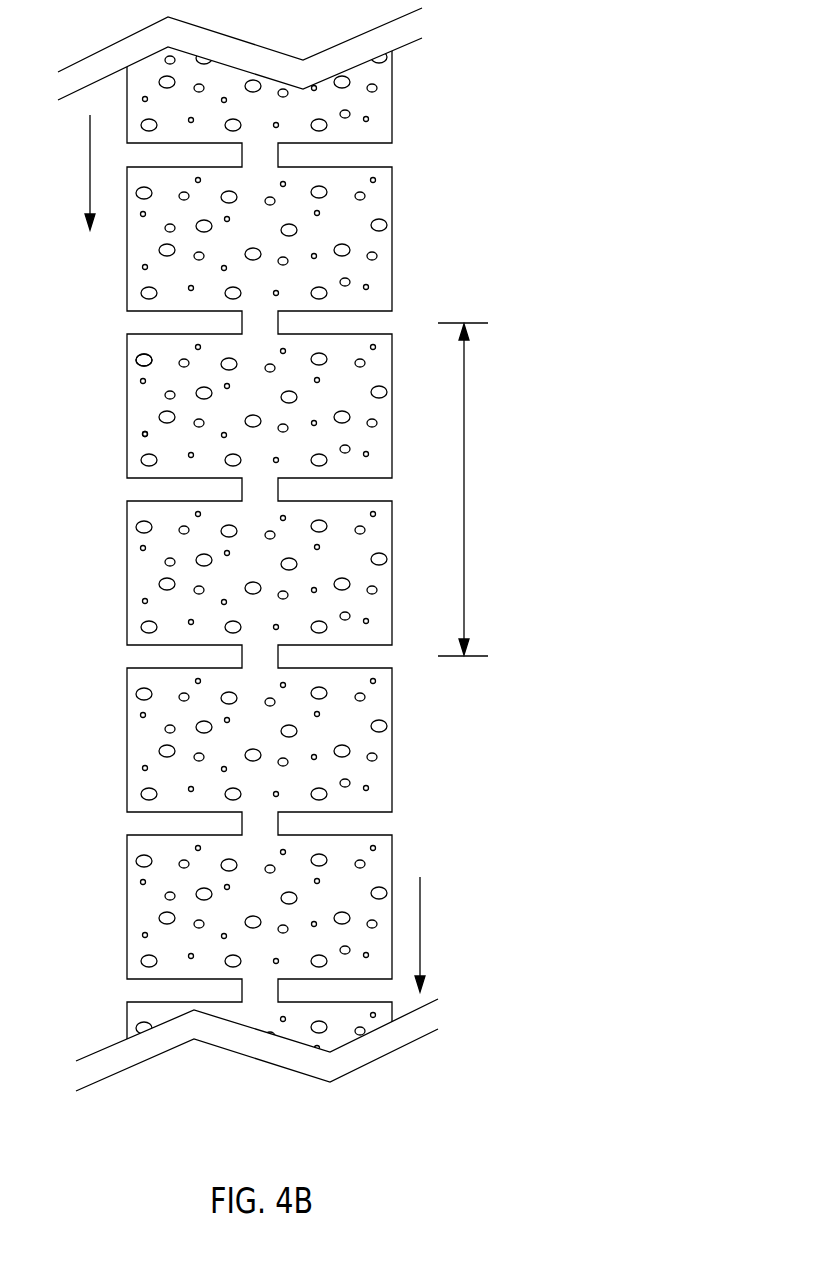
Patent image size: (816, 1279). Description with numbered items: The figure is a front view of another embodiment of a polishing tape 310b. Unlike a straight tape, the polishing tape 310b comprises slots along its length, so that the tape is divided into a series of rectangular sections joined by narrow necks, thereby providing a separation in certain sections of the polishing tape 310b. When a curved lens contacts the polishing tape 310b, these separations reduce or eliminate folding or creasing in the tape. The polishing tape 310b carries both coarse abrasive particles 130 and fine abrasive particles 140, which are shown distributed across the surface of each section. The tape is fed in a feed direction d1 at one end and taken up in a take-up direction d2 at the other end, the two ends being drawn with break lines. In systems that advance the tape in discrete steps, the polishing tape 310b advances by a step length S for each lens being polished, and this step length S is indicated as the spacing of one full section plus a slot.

The polishing tape 310b is at (392, 210).
The coarse abrasive particles 130 is at (137, 358).
The fine abrasive particles 140 is at (143, 434).
The step length S is at (463, 489).
The feed direction d1 is at (72, 172).
The take-up direction d2 is at (435, 934).